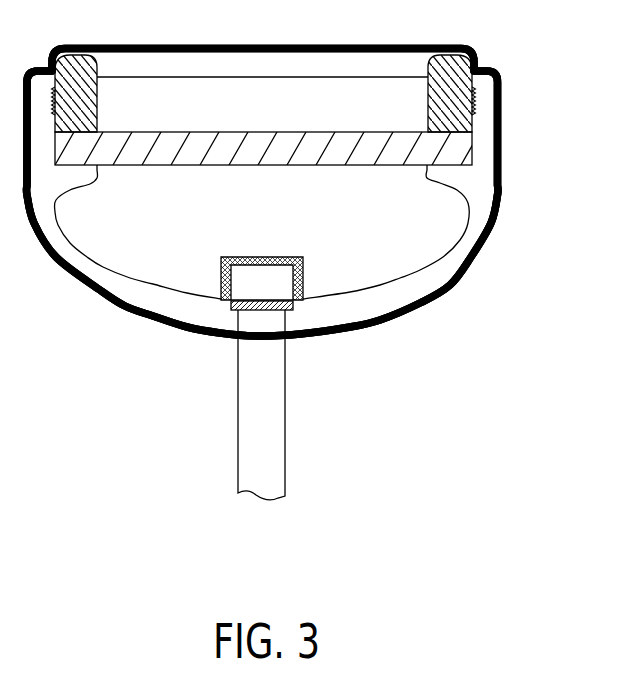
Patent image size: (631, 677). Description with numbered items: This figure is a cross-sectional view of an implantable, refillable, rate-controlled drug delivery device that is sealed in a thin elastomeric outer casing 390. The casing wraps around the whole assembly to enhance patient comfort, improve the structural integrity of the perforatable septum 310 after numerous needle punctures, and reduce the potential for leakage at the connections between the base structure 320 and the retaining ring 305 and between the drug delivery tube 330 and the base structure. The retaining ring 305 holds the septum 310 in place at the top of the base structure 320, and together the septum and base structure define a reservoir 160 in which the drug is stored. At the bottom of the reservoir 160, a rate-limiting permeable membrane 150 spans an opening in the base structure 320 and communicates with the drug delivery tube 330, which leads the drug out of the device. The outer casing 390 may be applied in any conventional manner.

The retaining ring 305 is at (488, 58).
The septum 310 is at (447, 152).
The base structure 320 is at (513, 200).
The outer casing 390 is at (457, 285).
The reservoir 160 is at (390, 243).
The rate-limiting permeable membrane 150 is at (235, 305).
The drug delivery tube 330 is at (268, 428).